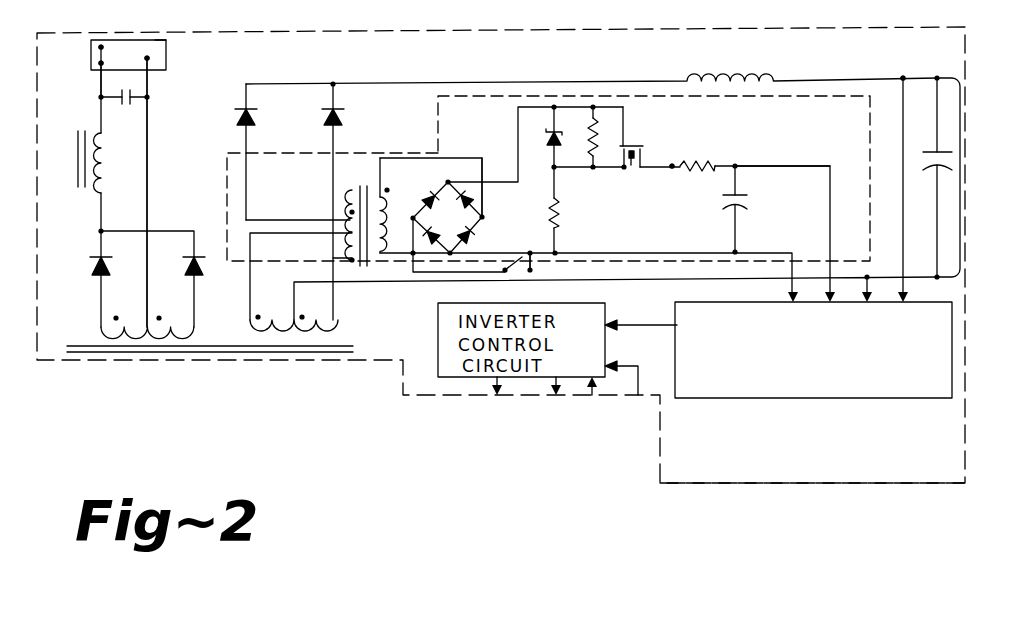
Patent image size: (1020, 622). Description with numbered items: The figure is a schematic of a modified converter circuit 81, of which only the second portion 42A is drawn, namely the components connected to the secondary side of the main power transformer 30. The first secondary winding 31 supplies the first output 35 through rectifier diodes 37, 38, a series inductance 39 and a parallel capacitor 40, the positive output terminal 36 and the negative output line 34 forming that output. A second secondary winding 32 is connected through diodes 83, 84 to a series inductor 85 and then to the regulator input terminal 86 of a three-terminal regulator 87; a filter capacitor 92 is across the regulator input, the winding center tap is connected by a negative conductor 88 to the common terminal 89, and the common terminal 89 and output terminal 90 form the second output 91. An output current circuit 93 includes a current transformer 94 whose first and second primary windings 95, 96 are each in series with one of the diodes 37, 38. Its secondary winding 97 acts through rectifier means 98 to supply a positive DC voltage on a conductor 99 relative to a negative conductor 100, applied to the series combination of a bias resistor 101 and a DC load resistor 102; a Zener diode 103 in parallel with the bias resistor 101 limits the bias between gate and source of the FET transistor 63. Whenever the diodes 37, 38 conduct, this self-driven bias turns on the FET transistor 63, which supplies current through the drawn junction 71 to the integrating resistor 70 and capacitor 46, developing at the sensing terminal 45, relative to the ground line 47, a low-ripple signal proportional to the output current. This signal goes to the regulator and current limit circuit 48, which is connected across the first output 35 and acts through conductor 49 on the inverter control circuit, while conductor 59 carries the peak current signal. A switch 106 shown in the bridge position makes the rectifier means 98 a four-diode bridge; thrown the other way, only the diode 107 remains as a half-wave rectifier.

The power transformer 30 is at (340, 343).
The first secondary winding 31 is at (330, 300).
The second secondary winding 32 is at (190, 303).
The negative output line 34 is at (665, 278).
The first output 35 is at (958, 163).
The positive output terminal 36 is at (937, 75).
The diode 37 is at (250, 115).
The diode 38 is at (333, 115).
The series inductance 39 is at (780, 78).
The parallel capacitor 40 is at (935, 150).
The second portion 42A is at (800, 482).
The sensing terminal 45 is at (735, 166).
The capacitor 46 is at (745, 193).
The ground line 47 is at (643, 367).
The regulator and current limit circuit 48 is at (893, 387).
The conductor 49 is at (647, 323).
The conductor 59 is at (570, 393).
The FET transistor 63 is at (637, 142).
The resistor 70 is at (700, 160).
The junction 71 is at (672, 166).
The converter circuit 81 is at (730, 523).
The diode 83 is at (97, 268).
The diode 84 is at (190, 270).
The series inductor 85 is at (101, 193).
The regulator input terminal 86 is at (101, 63).
The three-terminal regulator 87 is at (163, 70).
The negative conductor 88 is at (190, 147).
The common terminal 89 is at (147, 63).
The output terminal 90 is at (101, 47).
The second output 91 is at (163, 42).
The filter capacitor 92 is at (137, 103).
The output current circuit 93 is at (437, 120).
The current transformer 94 is at (357, 192).
The first primary winding 95 is at (350, 212).
The second primary winding 96 is at (338, 260).
The secondary winding 97 is at (395, 225).
The rectifier means 98 is at (458, 230).
The conductor 99 is at (518, 123).
The negative conductor 100 is at (603, 253).
The bias resistor 101 is at (598, 107).
The DC load resistor 102 is at (557, 195).
The Zener diode 103 is at (547, 140).
The switch 106 is at (500, 247).
The diode 107 is at (483, 213).